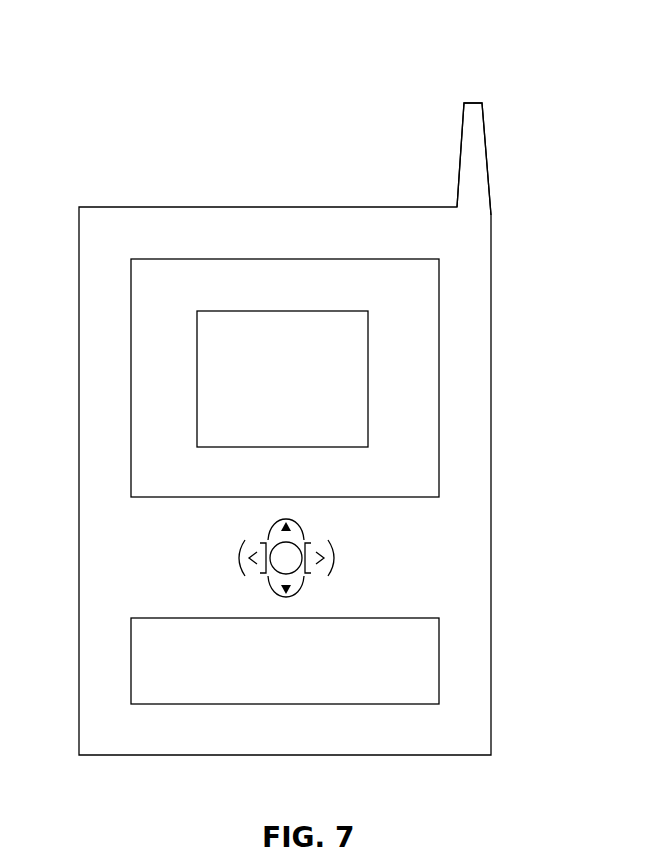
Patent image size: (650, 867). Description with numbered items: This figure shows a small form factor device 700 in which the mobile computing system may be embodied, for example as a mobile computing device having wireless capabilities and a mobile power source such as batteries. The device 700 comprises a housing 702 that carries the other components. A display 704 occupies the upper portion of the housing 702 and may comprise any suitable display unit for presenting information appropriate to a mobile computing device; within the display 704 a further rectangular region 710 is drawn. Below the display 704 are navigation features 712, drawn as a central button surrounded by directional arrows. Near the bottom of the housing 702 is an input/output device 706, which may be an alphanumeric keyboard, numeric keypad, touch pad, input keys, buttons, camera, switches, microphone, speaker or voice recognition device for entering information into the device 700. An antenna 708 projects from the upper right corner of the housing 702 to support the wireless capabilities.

The small form factor device 700 is at (92, 113).
The housing 702 is at (491, 481).
The display 704 is at (439, 275).
The input/output (I/O) device 706 is at (439, 652).
The antenna 708 is at (461, 148).
The display window 710 is at (368, 400).
The navigation features 712 is at (362, 548).